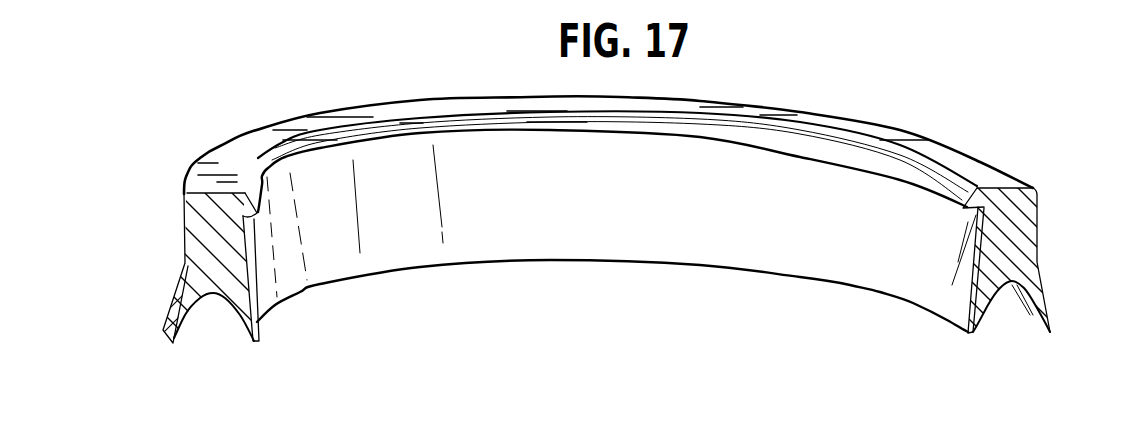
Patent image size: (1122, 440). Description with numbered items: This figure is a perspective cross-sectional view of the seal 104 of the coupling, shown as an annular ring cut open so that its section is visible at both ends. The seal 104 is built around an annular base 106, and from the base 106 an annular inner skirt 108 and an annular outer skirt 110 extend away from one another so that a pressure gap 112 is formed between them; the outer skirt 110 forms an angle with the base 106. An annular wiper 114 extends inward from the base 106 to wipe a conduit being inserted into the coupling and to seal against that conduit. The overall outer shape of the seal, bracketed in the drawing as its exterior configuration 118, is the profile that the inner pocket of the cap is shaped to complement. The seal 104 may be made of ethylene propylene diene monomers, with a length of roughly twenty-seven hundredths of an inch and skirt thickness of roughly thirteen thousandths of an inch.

The seal 104 is at (1002, 92).
The annular base 106 is at (1023, 208).
The annular inner skirt 108 is at (982, 305).
The annular outer skirt 110 is at (1040, 307).
The pressure gap 112 is at (1000, 318).
The annular wiper 114 is at (902, 168).
The exterior configuration 118 is at (157, 196).